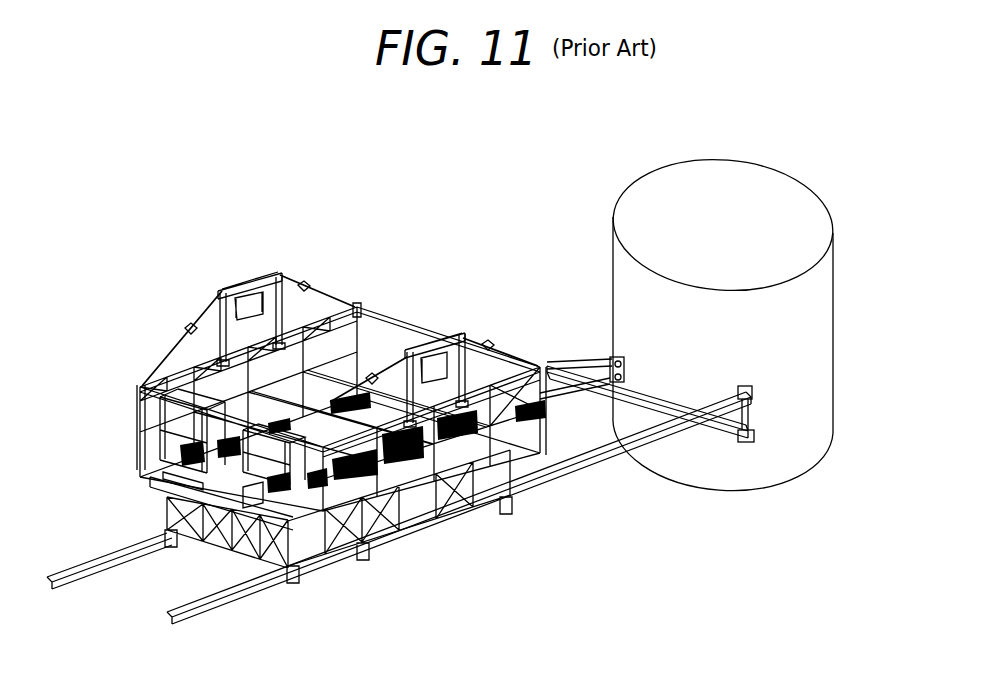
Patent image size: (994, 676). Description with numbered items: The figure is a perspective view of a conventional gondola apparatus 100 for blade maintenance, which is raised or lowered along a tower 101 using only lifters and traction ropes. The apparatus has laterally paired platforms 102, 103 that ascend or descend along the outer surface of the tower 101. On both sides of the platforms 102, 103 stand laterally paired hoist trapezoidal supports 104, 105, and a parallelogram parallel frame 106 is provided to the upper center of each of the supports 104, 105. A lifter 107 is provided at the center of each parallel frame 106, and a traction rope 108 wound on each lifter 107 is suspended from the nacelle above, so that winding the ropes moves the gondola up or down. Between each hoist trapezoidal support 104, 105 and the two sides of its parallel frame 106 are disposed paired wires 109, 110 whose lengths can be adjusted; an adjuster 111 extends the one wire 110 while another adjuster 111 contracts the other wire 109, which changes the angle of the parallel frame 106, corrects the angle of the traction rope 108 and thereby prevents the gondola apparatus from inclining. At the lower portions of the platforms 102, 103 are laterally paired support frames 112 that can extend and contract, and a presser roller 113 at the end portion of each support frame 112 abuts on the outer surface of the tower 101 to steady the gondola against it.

The gondola apparatus 100 is at (421, 538).
The tower 101 is at (834, 358).
The platform 102 is at (165, 475).
The platform 103 is at (258, 485).
The hoist trapezoidal support 104 is at (138, 420).
The hoist trapezoidal support 105 is at (545, 408).
The parallelogram parallel frame 106 is at (282, 295).
The lifter 107 is at (258, 297).
The traction rope 108 is at (254, 288).
The wire 109 is at (165, 352).
The wire 110 is at (372, 300).
The adjuster 111 is at (187, 330).
The support frame 112 is at (63, 586).
The presser roller 113 is at (624, 360).